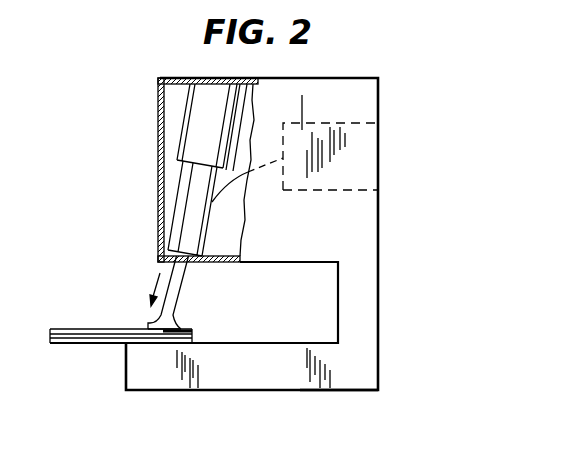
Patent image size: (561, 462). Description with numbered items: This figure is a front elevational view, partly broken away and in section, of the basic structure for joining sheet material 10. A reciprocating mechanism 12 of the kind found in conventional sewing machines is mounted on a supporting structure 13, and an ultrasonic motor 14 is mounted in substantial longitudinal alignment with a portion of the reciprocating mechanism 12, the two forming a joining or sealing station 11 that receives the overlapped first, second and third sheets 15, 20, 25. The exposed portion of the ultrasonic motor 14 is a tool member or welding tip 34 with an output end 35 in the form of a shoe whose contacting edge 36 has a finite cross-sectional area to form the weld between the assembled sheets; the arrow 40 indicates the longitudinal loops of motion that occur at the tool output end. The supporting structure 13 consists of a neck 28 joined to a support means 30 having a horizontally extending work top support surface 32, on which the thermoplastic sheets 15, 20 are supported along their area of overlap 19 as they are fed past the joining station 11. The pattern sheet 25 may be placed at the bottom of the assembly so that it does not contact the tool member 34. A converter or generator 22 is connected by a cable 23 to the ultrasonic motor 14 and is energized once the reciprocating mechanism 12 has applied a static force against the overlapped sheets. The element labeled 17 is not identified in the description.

The basic structure for joining sheet material 10 is at (380, 165).
The joining or sealing station 11 is at (197, 332).
The reciprocating mechanism 12 is at (203, 80).
The supporting structure 13 is at (380, 219).
The ultrasonic motor 14 is at (197, 182).
The first sheet 15 is at (57, 346).
The base layer 17 is at (95, 346).
The area of overlap 19 is at (152, 344).
The second sheet 20 is at (50, 337).
The converter or generator 22 is at (360, 118).
The cable 23 is at (223, 203).
The third sheet 25 is at (50, 326).
The neck 28 is at (380, 283).
The support means 30 is at (340, 378).
The work top support surface 32 is at (303, 343).
The tool member or welding tip 34 is at (180, 277).
The output end 35 is at (150, 326).
The contacting edge 36 is at (187, 321).
The arrow 40 is at (150, 289).